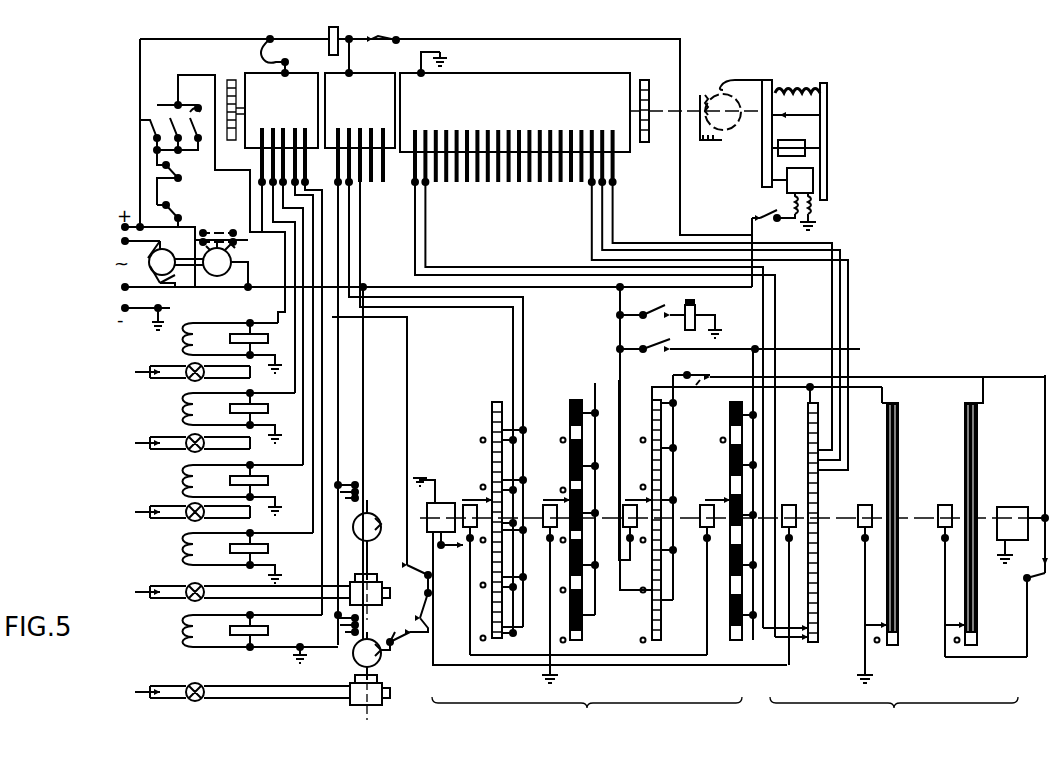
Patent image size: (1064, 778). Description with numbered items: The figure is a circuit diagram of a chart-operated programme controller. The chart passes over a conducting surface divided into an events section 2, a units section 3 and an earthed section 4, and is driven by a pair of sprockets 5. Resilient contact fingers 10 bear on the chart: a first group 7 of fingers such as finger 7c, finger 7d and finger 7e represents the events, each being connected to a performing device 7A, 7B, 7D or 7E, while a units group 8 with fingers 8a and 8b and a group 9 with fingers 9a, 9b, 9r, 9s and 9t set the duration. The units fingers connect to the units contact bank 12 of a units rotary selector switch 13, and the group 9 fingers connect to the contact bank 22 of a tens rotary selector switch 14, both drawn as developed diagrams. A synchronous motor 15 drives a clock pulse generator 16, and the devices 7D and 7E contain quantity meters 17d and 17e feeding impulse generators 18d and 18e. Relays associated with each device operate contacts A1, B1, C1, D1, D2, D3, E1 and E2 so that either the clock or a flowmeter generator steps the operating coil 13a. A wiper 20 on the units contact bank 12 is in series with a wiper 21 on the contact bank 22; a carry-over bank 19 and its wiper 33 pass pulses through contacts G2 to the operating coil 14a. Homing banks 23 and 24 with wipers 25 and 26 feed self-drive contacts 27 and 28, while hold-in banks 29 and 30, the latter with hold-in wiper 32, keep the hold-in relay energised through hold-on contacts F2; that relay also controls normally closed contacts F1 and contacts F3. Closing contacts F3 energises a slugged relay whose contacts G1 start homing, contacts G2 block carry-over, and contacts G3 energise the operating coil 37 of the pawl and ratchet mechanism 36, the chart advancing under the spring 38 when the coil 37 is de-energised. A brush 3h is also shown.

The first section of conducting surface 2 is at (312, 78).
The units section of conducting surface 3 is at (388, 78).
The conducting section 4 is at (482, 78).
The sprockets 5 is at (647, 86).
The first group of contact fingers 7 is at (266, 133).
The finger 7d is at (277, 133).
The finger 7e is at (299, 133).
The units group of fingers 8 is at (390, 108).
The finger 8a is at (340, 149).
The finger 8b is at (353, 133).
The 5's and 10's group of fingers 9 is at (611, 110).
The finger 9a is at (417, 130).
The finger 9b is at (432, 130).
The finger 9r is at (590, 130).
The finger 9s is at (601, 130).
The finger 9t is at (614, 130).
The fixed resilient contact fingers 10 is at (624, 171).
The units contact bank 12 is at (494, 402).
The units rotary selector switch 13 is at (587, 711).
The operating coil 13a is at (448, 507).
The 10's rotary selector switch 14 is at (894, 713).
The operating coil 14a is at (1012, 507).
The synchronous motor 15 is at (161, 264).
The clock electrical pulse generator 16 is at (235, 266).
The quantity meter 17d is at (382, 600).
The quantity meter 17e is at (382, 705).
The electrical impulse generator 18d is at (373, 517).
The electrical impulse generator 18e is at (378, 660).
The second bank of contacts 19 is at (655, 400).
The wiper 20 is at (478, 495).
The wiper 21 is at (800, 637).
The contact bank 22 is at (810, 403).
The homing bank of contacts 23 is at (736, 400).
The homing bank of contacts 24 is at (969, 403).
The homing wiper 25 is at (715, 561).
The homing wiper 26 is at (975, 608).
The self-drive contacts 27 is at (450, 553).
The self-drive contacts 28 is at (1041, 488).
The bank of hold-in contacts 29 is at (576, 400).
The bank of hold-in contacts 30 is at (895, 403).
The hold-in wiper 32 is at (870, 618).
The wiper 33 is at (635, 470).
The pawl and ratchet mechanism 36 is at (765, 70).
The operating coil 37 is at (815, 170).
The spring 38 is at (786, 66).
The contact brush 3h is at (555, 575).
The electrical device 7A is at (188, 368).
The electrical device 7B is at (188, 439).
The finger 7c is at (188, 510).
The controlled device 7D is at (188, 584).
The controlled device 7E is at (188, 685).
The relay contacts A1 is at (134, 131).
The relay contacts B1 is at (202, 154).
The relay contacts C1 is at (195, 112).
The relay contacts D1 is at (176, 168).
The relay contacts E1 is at (176, 208).
The normally closed contacts F1 is at (264, 38).
The hold-on contacts F2 is at (385, 27).
The relay contacts F3 is at (643, 306).
The relay contacts G1 is at (738, 340).
The relay contacts G2 is at (859, 368).
The relay contacts G3 is at (762, 240).
The relay contacts D2 is at (416, 566).
The relay contacts E2 is at (432, 611).
The relay contacts D3 is at (409, 644).